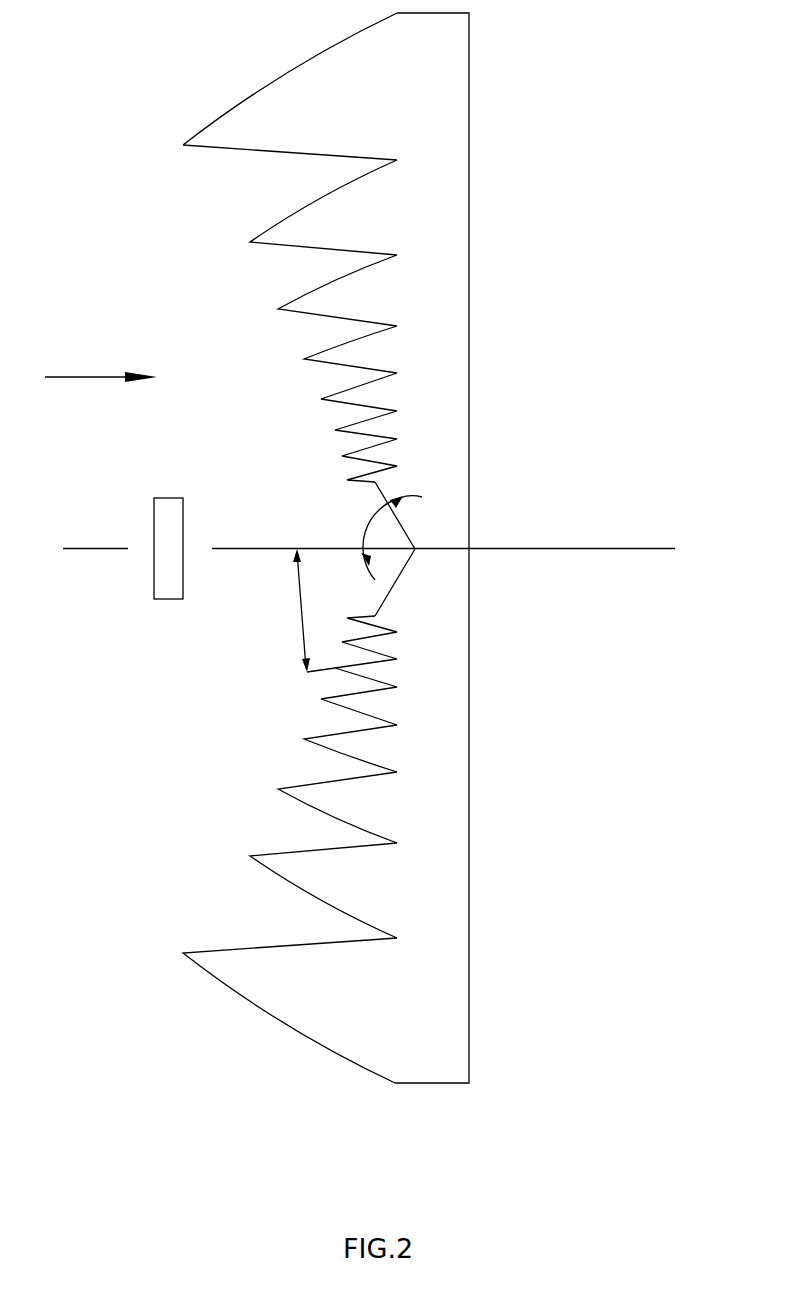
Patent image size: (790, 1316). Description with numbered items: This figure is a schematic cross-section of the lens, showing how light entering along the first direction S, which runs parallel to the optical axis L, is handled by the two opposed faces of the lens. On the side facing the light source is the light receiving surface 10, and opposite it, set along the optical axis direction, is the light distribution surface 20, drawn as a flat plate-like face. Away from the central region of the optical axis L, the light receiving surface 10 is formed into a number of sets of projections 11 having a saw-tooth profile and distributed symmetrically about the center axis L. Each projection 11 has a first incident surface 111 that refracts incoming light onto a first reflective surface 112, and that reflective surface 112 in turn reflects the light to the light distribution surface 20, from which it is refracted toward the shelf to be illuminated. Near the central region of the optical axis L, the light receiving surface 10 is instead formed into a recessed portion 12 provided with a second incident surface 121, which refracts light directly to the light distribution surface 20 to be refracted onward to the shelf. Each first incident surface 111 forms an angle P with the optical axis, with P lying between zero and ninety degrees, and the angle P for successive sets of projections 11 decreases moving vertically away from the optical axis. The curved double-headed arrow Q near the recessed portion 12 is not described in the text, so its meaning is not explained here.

The light receiving surface 10 is at (381, 543).
The projections 11 is at (344, 543).
The first incident surface 111 is at (247, 148).
The first reflective surface 112 is at (301, 63).
The recessed portion 12 is at (474, 547).
The second incident surface 121 is at (402, 526).
The light distribution surface 20 is at (469, 165).
The first direction S is at (101, 357).
The angle P is at (298, 610).
The rotation angle Q is at (367, 522).
The optical axis L is at (620, 548).